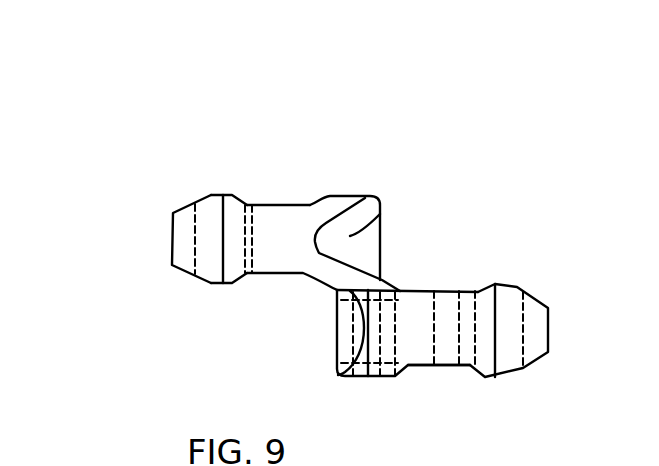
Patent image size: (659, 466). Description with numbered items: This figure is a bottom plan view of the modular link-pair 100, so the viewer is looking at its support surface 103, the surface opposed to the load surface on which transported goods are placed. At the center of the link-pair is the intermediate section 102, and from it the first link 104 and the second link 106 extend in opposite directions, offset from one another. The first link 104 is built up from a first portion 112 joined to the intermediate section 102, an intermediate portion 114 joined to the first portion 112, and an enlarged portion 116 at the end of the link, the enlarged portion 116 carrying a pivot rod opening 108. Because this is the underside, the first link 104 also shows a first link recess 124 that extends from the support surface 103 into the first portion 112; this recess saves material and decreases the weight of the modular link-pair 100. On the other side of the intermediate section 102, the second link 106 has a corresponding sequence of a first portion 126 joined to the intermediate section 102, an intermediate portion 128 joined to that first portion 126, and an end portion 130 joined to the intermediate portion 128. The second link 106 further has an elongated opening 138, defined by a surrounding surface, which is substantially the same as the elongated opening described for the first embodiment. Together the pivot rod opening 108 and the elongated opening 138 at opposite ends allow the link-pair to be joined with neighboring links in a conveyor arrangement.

The modular link-pair 100 is at (444, 217).
The intermediate section 102 is at (369, 289).
The support surface 103 is at (295, 220).
The first link 104 is at (262, 208).
The second link 106 is at (465, 298).
The pivot rod opening 108 is at (202, 190).
The first portion 112 is at (332, 202).
The intermediate portion 114 is at (275, 208).
The enlarged portion 116 is at (190, 212).
The first link recess 124 is at (381, 224).
The first portion 126 is at (404, 300).
The intermediate portion 128 is at (435, 298).
The end portion 130 is at (485, 300).
The elongated opening 138 is at (440, 378).